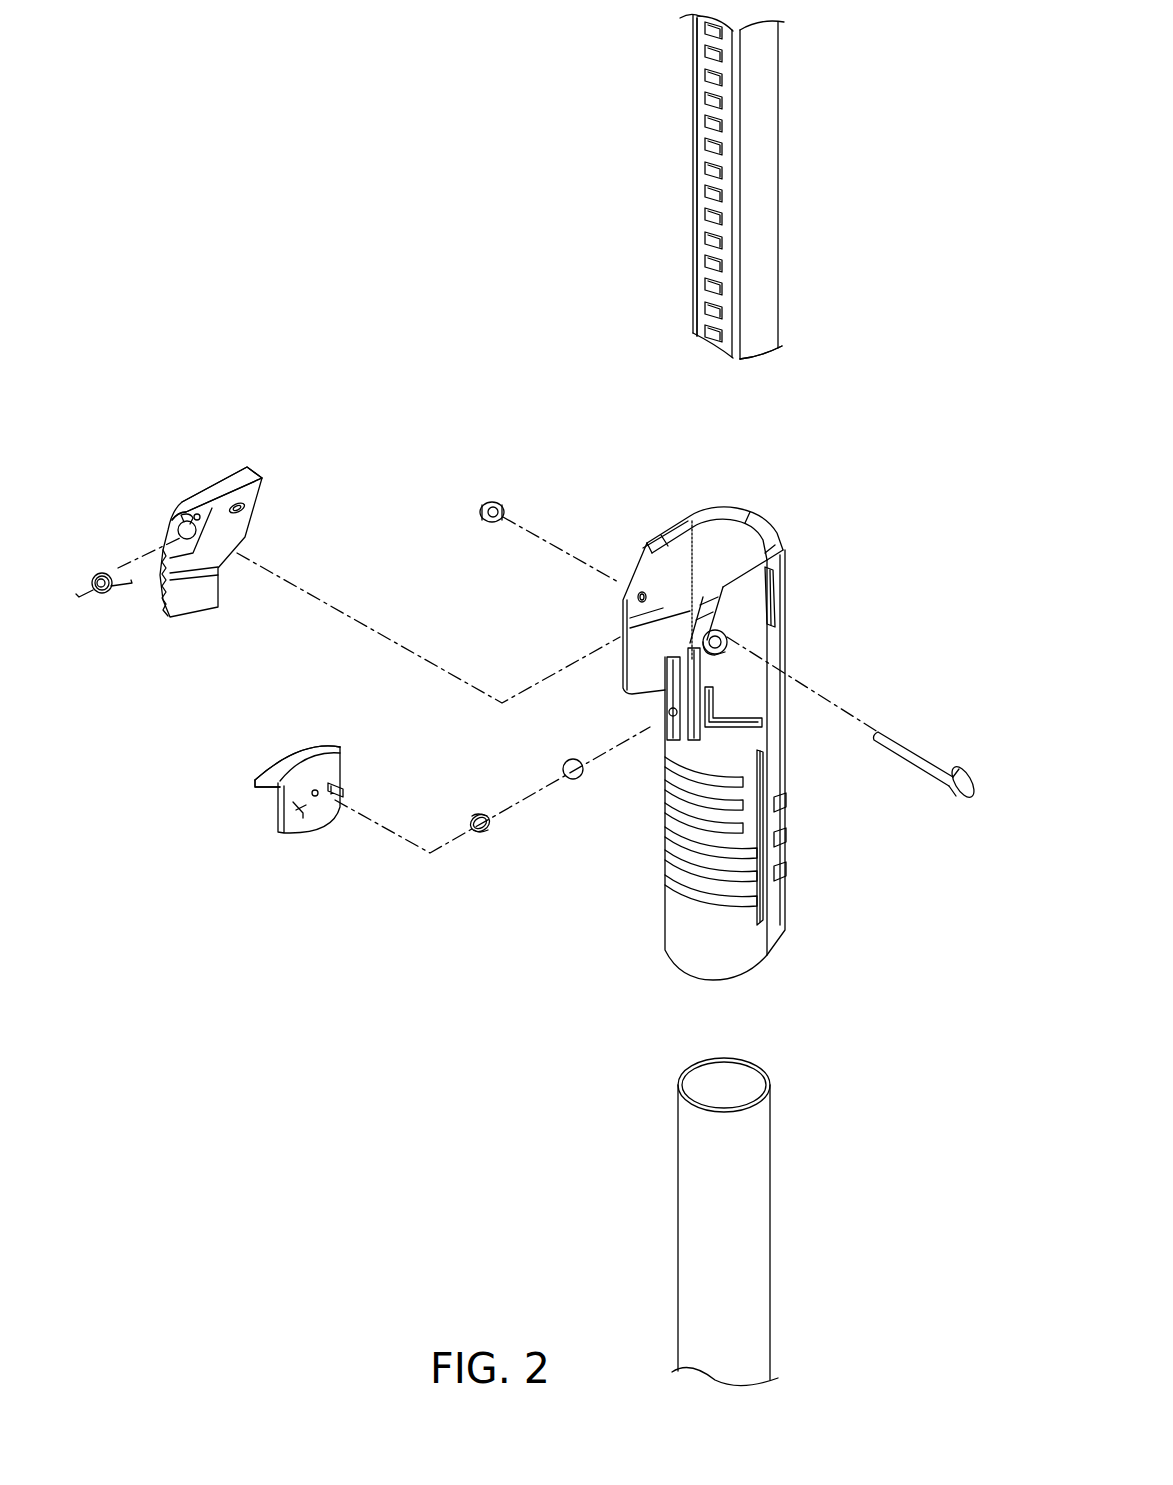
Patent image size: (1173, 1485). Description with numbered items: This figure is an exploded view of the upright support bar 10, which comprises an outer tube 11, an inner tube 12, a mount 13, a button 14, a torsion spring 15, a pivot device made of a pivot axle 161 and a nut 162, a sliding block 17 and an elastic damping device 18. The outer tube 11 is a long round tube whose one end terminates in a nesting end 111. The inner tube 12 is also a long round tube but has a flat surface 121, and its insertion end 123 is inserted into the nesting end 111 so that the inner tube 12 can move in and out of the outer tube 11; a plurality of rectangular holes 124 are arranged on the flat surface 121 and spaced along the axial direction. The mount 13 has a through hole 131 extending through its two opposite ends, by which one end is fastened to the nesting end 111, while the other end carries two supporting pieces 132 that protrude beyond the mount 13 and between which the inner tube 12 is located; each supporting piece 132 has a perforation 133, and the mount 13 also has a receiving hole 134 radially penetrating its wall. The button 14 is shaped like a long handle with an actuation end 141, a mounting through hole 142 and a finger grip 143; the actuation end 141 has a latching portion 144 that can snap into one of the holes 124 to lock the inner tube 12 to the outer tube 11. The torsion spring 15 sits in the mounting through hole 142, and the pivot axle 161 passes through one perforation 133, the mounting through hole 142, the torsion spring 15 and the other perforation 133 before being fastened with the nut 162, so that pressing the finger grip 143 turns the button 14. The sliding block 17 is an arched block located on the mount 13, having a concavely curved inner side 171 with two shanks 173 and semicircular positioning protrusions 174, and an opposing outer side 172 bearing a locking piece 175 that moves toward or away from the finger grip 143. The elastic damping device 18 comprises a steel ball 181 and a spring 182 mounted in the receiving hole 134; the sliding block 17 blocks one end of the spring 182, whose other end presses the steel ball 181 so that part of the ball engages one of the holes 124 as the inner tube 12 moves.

The upright support bar 10 is at (388, 262).
The outer tube 11 is at (788, 1204).
The nesting end 111 is at (760, 1070).
The inner tube 12 is at (729, 194).
The flat surface 121 is at (697, 34).
The insertion end 123 is at (760, 356).
The holes 124 is at (705, 143).
The mount 13 is at (711, 700).
The through hole 131 is at (750, 540).
The supporting pieces 132 is at (656, 532).
The perforation 133 is at (727, 640).
The receiving hole 134 is at (668, 712).
The button 14 is at (233, 541).
The actuation end 141 is at (250, 466).
The mounting through hole 142 is at (175, 537).
The finger grip 143 is at (165, 620).
The latching portion 144 is at (242, 510).
The torsion spring 15 is at (107, 594).
The pivot axle 161 is at (915, 752).
The nut 162 is at (495, 502).
The sliding block 17 is at (293, 779).
The inner side 171 is at (332, 766).
The outer side 172 is at (325, 746).
The shanks 173 is at (345, 793).
The positioning protrusion 174 is at (318, 797).
The locking piece 175 is at (268, 764).
The elastic damping device 18 is at (530, 866).
The steel ball 181 is at (573, 781).
The spring 182 is at (473, 875).